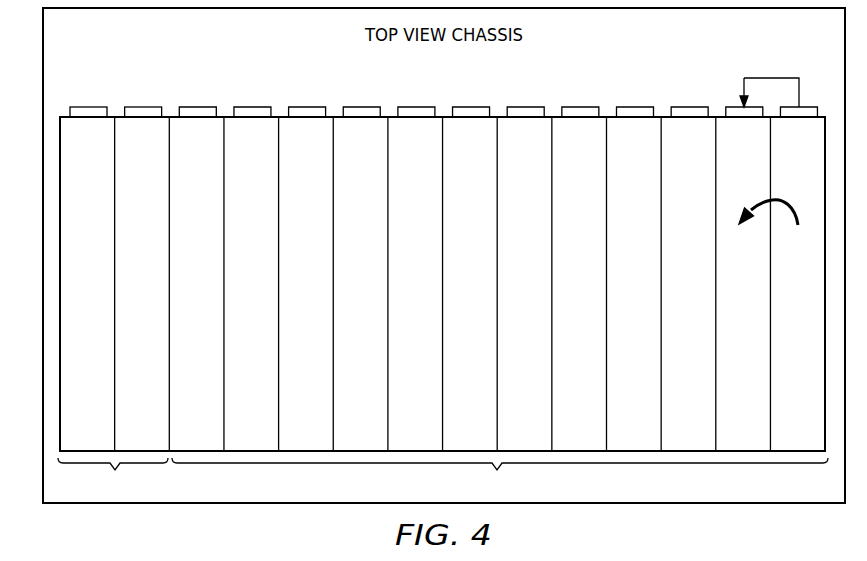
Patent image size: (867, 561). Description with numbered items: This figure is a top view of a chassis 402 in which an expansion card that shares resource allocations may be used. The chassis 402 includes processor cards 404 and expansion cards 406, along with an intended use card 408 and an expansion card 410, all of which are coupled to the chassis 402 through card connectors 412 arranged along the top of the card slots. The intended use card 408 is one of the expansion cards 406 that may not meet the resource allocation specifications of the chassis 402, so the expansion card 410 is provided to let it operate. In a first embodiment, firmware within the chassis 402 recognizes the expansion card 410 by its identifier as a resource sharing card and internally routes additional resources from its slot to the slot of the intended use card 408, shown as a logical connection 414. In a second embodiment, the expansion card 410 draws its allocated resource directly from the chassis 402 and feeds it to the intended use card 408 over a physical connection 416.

The chassis 402 is at (98, 47).
The processor cards 404 is at (113, 302).
The expansion cards 406 is at (498, 264).
The intended use card 408 is at (761, 297).
The expansion card 410 is at (815, 297).
The card connectors 412 is at (524, 107).
The logical connection 414 is at (770, 78).
The physical connection 416 is at (774, 199).